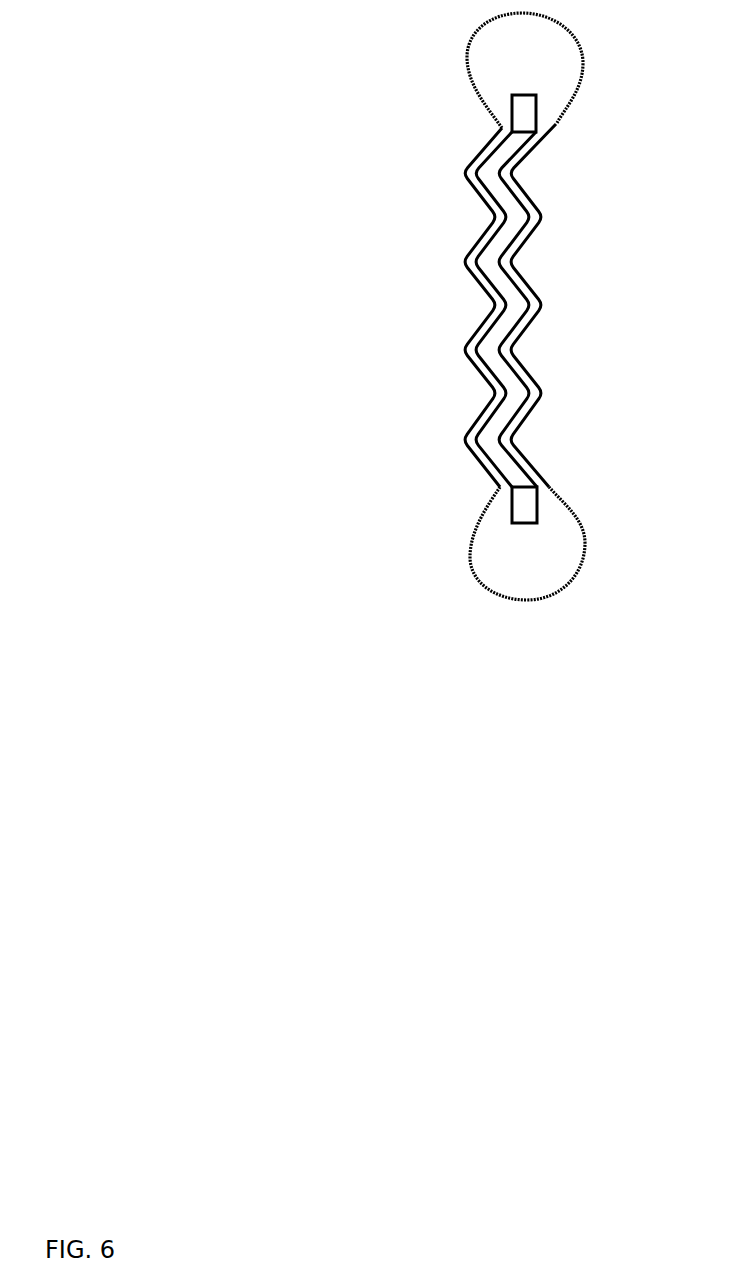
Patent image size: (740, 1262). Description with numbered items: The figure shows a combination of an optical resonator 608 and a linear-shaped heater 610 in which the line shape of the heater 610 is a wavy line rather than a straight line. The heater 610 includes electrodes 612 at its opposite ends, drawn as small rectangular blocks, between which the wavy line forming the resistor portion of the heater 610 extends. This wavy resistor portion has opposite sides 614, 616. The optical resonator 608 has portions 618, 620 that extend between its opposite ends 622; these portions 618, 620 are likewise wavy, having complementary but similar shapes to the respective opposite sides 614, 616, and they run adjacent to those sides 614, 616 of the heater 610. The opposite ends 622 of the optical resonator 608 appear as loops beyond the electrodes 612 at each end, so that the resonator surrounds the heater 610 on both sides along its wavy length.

The optical resonator 608 is at (563, 27).
The linear-shaped heater 610 is at (518, 379).
The electrodes 612 is at (537, 110).
The first side of heater 614 is at (477, 164).
The second side of heater 616 is at (527, 199).
The first portion of optical resonator 618 is at (480, 243).
The second portion of optical resonator 620 is at (525, 281).
The opposite ends of optical resonator 622 is at (486, 101).